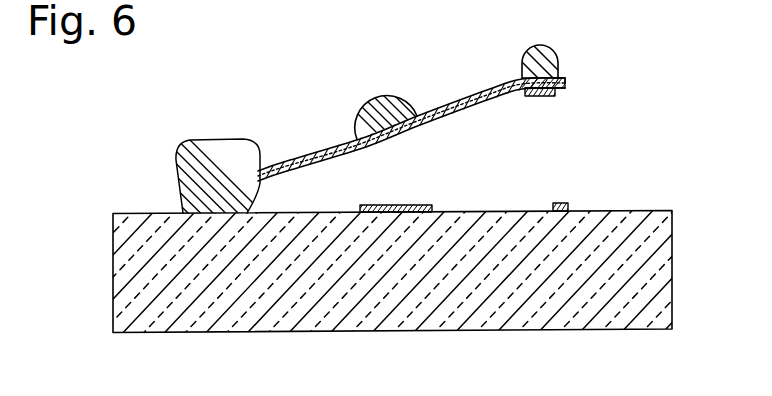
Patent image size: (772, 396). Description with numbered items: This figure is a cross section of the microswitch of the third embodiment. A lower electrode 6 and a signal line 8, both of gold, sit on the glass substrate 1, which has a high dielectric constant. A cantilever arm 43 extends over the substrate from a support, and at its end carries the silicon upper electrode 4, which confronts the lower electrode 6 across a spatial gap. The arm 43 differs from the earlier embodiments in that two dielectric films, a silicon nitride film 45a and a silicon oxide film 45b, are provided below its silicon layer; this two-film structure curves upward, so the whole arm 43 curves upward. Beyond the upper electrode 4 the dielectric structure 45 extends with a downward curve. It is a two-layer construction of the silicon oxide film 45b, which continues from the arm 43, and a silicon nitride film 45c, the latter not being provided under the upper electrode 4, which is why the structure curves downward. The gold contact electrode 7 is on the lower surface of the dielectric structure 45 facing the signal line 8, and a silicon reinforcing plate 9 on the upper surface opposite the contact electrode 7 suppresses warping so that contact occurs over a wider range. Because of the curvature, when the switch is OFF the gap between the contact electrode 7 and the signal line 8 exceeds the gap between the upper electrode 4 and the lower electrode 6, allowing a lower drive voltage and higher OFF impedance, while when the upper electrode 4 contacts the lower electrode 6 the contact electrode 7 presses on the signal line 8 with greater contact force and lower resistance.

The glass substrate 1 is at (672, 270).
The upper electrode 4 is at (384, 90).
The lower electrode 6 is at (396, 205).
The contact electrode 7 is at (550, 97).
The signal line 8 is at (559, 203).
The reinforcing plate 9 is at (561, 64).
The arm 43 is at (302, 160).
The dielectric structure 45 is at (479, 120).
The silicon nitride film 45a is at (333, 148).
The silicon oxide film 45b is at (566, 80).
The silicon nitride film 45c is at (567, 86).